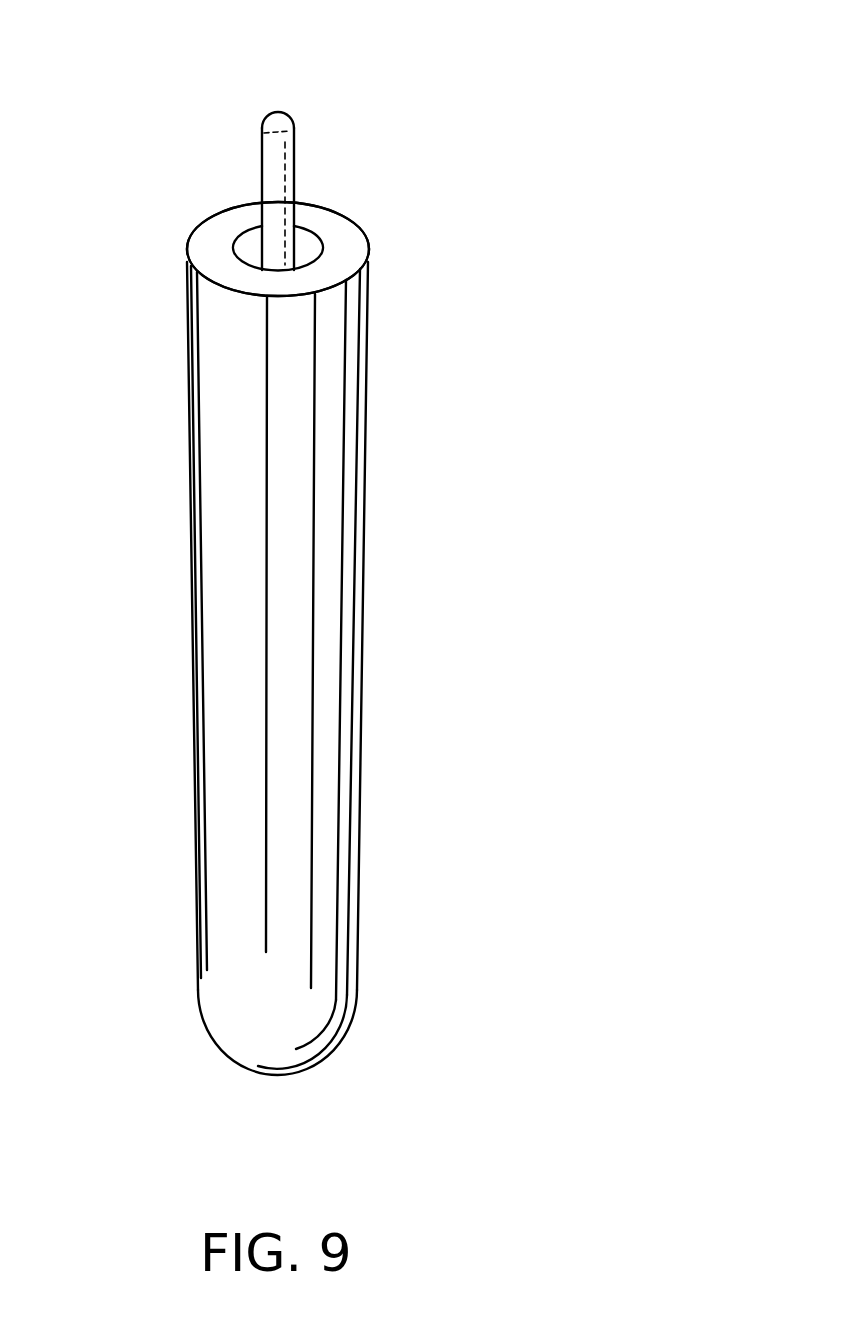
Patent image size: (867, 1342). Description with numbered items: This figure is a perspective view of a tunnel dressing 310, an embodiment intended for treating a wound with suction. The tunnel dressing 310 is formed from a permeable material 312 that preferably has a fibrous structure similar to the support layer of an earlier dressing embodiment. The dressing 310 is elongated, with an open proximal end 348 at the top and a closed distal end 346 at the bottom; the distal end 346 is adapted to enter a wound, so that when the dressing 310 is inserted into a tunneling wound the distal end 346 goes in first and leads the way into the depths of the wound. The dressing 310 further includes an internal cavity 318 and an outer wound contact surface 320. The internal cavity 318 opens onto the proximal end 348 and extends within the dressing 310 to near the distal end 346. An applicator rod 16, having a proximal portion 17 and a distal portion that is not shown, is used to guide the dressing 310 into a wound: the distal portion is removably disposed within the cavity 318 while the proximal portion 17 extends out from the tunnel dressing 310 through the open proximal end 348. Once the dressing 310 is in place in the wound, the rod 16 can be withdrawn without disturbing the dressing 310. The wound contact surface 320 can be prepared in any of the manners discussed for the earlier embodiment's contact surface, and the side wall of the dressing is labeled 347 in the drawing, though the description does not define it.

The proximal portion 17 is at (281, 117).
The applicator rod 16 is at (284, 156).
The internal cavity 318 is at (308, 243).
The permeable material 312 is at (343, 243).
The tunnel dressing 310 is at (408, 325).
The wound contact surface 320 is at (368, 432).
The side wall 347 is at (188, 637).
The closed distal end 346 is at (236, 1075).
The open proximal end 348 is at (221, 203).